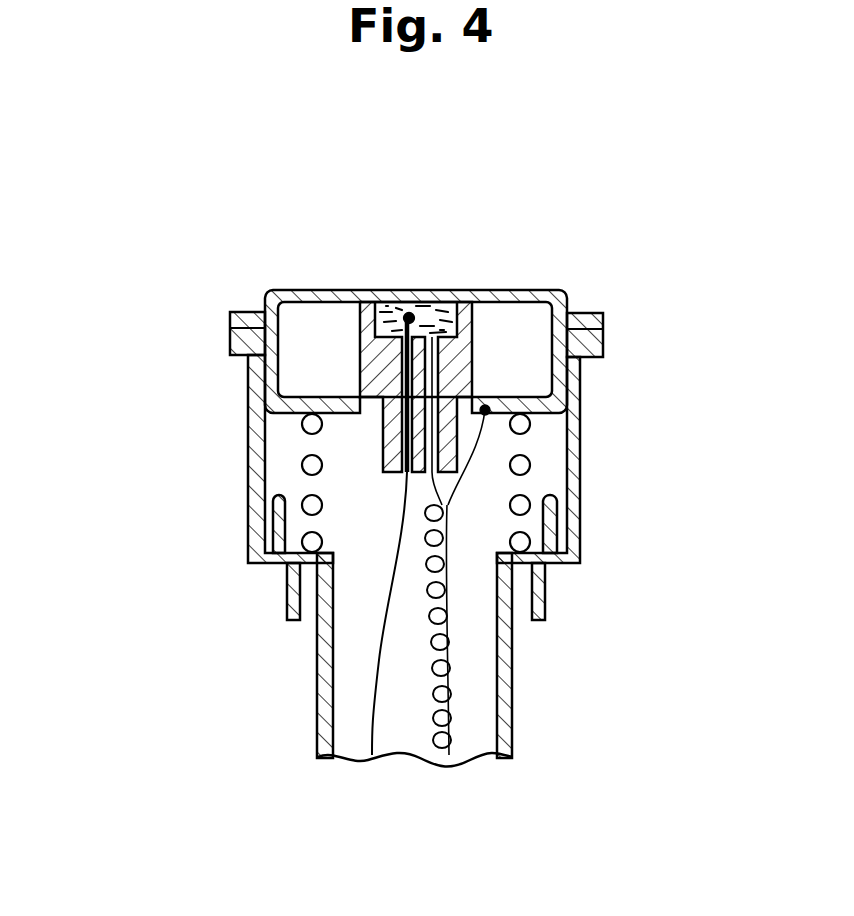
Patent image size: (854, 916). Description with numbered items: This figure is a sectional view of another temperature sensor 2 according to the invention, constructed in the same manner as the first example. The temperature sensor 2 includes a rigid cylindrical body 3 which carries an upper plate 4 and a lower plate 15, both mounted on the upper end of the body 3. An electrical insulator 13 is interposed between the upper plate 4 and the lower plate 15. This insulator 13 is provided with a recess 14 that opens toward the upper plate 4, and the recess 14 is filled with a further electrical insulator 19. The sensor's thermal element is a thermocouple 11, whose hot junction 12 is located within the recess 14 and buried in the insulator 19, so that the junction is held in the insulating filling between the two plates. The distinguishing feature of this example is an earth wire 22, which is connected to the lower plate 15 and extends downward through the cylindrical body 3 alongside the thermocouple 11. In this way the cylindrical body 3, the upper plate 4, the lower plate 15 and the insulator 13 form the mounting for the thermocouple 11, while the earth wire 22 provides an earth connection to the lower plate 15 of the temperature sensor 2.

The temperature sensor 2 is at (613, 343).
The rigid cylindrical body 3 is at (578, 460).
The upper plate 4 is at (307, 300).
The thermocouple 11 is at (467, 300).
The hot junction 12 is at (432, 302).
The electrical insulator 13 is at (470, 325).
The recess 14 is at (383, 302).
The lower plate 15 is at (302, 426).
The electrical insulator 19 is at (402, 302).
The earth wire 22 is at (460, 502).